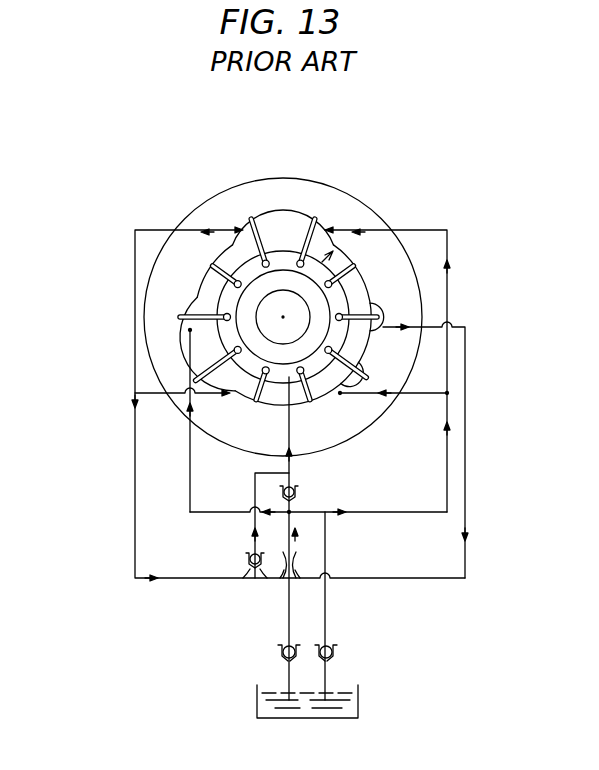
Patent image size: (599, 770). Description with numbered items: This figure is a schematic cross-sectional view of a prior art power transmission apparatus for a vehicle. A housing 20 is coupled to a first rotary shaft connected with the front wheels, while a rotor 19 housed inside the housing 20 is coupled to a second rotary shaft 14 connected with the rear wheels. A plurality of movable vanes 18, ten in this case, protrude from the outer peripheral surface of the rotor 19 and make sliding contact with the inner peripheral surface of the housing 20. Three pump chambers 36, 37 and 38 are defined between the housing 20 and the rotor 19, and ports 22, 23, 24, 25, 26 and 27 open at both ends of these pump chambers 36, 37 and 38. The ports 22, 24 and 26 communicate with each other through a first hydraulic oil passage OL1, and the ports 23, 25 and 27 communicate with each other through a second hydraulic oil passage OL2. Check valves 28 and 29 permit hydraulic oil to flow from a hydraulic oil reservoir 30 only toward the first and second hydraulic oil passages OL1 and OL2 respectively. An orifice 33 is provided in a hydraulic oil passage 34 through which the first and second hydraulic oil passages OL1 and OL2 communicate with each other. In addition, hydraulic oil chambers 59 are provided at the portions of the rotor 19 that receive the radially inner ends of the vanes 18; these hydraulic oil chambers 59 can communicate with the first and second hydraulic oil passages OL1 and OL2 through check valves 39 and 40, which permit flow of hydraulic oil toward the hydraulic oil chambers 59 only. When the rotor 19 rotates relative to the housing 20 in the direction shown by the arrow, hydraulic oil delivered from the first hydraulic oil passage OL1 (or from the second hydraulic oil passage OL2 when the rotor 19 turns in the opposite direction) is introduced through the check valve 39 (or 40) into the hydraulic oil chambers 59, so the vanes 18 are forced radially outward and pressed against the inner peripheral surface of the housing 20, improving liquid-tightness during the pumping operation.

The second rotary shaft 14 is at (297, 305).
The movable vanes 18 is at (263, 213).
The rotor 19 is at (283, 237).
The housing 20 is at (335, 187).
The port 22 is at (222, 400).
The port 23 is at (196, 308).
The port 24 is at (248, 215).
The port 25 is at (328, 212).
The port 26 is at (379, 329).
The port 27 is at (338, 396).
The check valve 28 is at (277, 648).
The check valve 29 is at (340, 650).
The hydraulic oil reservoir 30 is at (360, 700).
The orifice 33 is at (304, 558).
The hydraulic oil passage 34 is at (296, 518).
The pump chamber 36 is at (305, 220).
The pump chamber 37 is at (372, 361).
The pump chamber 38 is at (196, 358).
The check valve 39 is at (245, 553).
The check valve 40 is at (300, 490).
The hydraulic oil chambers 59 is at (226, 248).
The first hydraulic oil passage OL1 is at (135, 466).
The second hydraulic oil passage OL2 is at (448, 239).